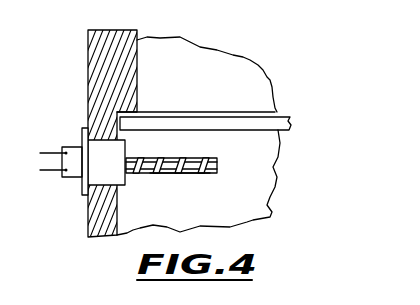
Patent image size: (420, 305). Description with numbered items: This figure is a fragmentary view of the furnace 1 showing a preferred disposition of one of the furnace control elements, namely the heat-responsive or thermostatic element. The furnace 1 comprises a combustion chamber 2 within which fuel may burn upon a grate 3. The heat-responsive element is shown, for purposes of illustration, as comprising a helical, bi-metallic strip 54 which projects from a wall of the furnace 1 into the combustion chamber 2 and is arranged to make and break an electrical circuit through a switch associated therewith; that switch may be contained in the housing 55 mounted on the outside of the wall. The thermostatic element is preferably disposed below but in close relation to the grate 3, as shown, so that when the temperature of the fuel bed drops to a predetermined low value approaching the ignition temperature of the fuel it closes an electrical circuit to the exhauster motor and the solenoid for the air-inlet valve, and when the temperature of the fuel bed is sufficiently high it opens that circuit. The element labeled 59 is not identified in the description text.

The furnace 1 is at (84, 97).
The combustion chamber 2 is at (198, 136).
The grate 3 is at (240, 103).
The helical bi-metallic strip 54 is at (182, 157).
The housing 55 is at (75, 175).
The screw thread 59 is at (187, 178).